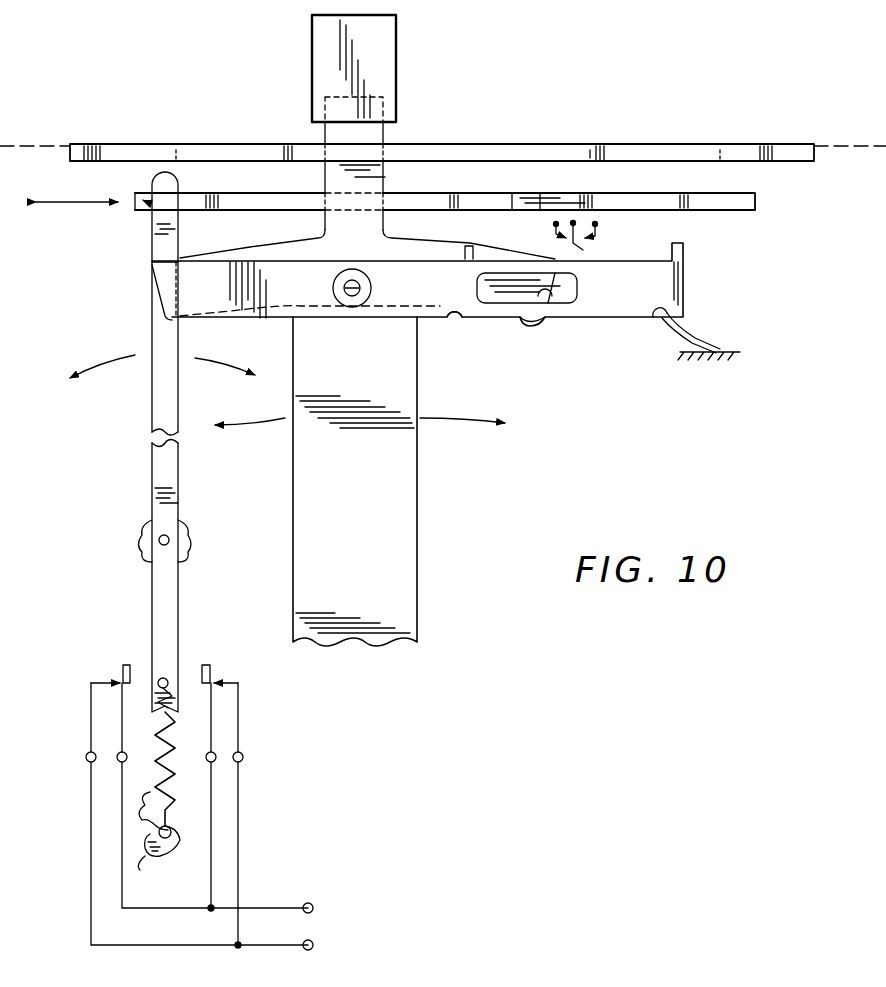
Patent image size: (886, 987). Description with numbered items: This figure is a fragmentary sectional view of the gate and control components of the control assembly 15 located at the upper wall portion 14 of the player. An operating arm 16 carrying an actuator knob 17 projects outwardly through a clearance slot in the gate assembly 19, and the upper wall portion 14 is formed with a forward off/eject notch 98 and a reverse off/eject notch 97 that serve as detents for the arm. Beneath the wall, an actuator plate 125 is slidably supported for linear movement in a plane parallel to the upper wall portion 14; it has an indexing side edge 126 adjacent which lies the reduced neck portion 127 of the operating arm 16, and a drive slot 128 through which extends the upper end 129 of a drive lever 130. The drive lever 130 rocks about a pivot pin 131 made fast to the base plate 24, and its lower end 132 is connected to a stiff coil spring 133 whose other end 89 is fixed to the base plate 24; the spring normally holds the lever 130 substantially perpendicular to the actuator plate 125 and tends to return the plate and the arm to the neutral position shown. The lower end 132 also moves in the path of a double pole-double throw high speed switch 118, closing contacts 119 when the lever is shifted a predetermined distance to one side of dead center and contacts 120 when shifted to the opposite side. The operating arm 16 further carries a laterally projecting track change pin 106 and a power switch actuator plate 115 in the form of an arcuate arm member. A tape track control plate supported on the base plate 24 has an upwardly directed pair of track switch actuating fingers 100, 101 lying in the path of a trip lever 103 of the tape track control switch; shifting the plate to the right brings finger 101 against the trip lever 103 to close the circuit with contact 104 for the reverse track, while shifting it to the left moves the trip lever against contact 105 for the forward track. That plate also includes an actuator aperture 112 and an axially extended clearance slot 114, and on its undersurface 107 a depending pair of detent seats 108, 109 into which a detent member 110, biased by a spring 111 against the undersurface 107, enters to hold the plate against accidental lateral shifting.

The upper wall portion 14 is at (114, 148).
The forward off/eject notch 98 is at (176, 150).
The gate assembly 19 is at (608, 128).
The reverse off/eject notch 97 is at (722, 150).
The control assembly 15 is at (475, 125).
The actuator knob 17 is at (396, 80).
The reduced neck portion 127 is at (385, 180).
The actuator plate 125 is at (755, 204).
The indexing side edge 126 is at (470, 208).
The drive slot 128 is at (138, 216).
The upper end of drive lever 129 is at (178, 182).
The drive lever 130 is at (178, 497).
The pivot pin 131 is at (170, 540).
The base plate 24 is at (140, 545).
The lower end of drive lever 132 is at (175, 680).
The track switch actuating finger 100 is at (683, 243).
The power switch actuator plate 115 is at (270, 246).
The track switch actuating finger 101 is at (474, 242).
The track change pin 106 is at (362, 288).
The actuator aperture 112 is at (350, 308).
The clearance slot 114 is at (545, 296).
The detent seat 109 is at (455, 322).
The undersurface 107 is at (490, 320).
The detent member 110 is at (660, 326).
The detent seat 108 is at (672, 312).
The spring 111 is at (702, 337).
The contact 105 is at (556, 224).
The trip lever 103 is at (583, 250).
The contact 104 is at (598, 226).
The operating arm 16 is at (417, 558).
The contacts 120 is at (122, 668).
The contacts 119 is at (212, 672).
The high speed switch 118 is at (270, 725).
The coil spring 133 is at (153, 775).
The other end of coil spring 89 is at (172, 842).